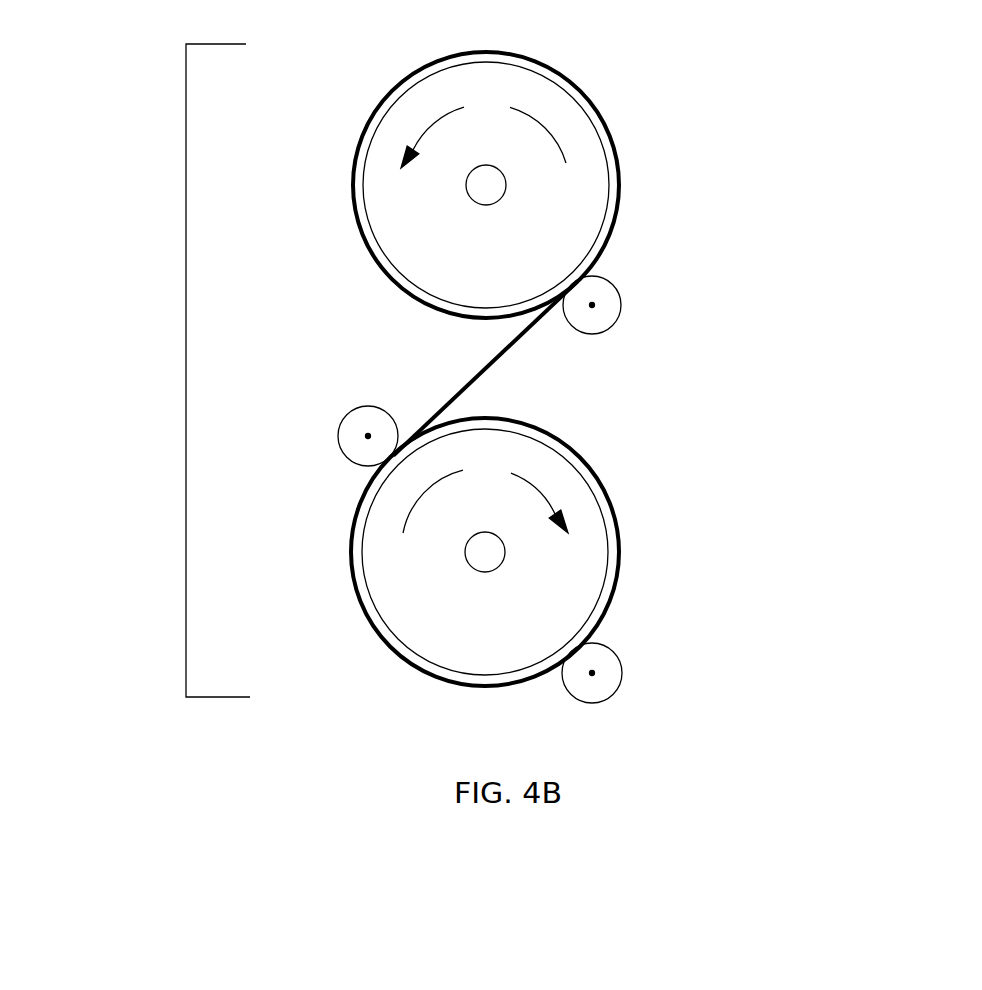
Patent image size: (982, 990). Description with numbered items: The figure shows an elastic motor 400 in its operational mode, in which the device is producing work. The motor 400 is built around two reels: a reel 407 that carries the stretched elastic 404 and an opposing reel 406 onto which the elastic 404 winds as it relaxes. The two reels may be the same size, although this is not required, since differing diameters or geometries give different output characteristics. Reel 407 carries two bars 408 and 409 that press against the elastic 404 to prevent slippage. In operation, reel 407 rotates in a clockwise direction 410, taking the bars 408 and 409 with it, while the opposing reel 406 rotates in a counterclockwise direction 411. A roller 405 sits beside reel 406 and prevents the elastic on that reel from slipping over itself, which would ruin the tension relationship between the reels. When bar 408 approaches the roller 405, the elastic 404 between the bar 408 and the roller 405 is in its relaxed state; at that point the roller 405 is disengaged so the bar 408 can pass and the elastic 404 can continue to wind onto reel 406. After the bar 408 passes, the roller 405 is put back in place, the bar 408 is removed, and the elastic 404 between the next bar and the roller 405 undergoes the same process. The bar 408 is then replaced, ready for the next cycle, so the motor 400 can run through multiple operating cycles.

The motor 400 is at (186, 351).
The elastic 404 is at (620, 567).
The roller 405 is at (618, 327).
The reel 406 is at (402, 247).
The reel 407 is at (445, 635).
The bar 408 is at (337, 461).
The bar 409 is at (622, 693).
The clockwise direction 410 is at (485, 495).
The counterclockwise direction 411 is at (483, 129).